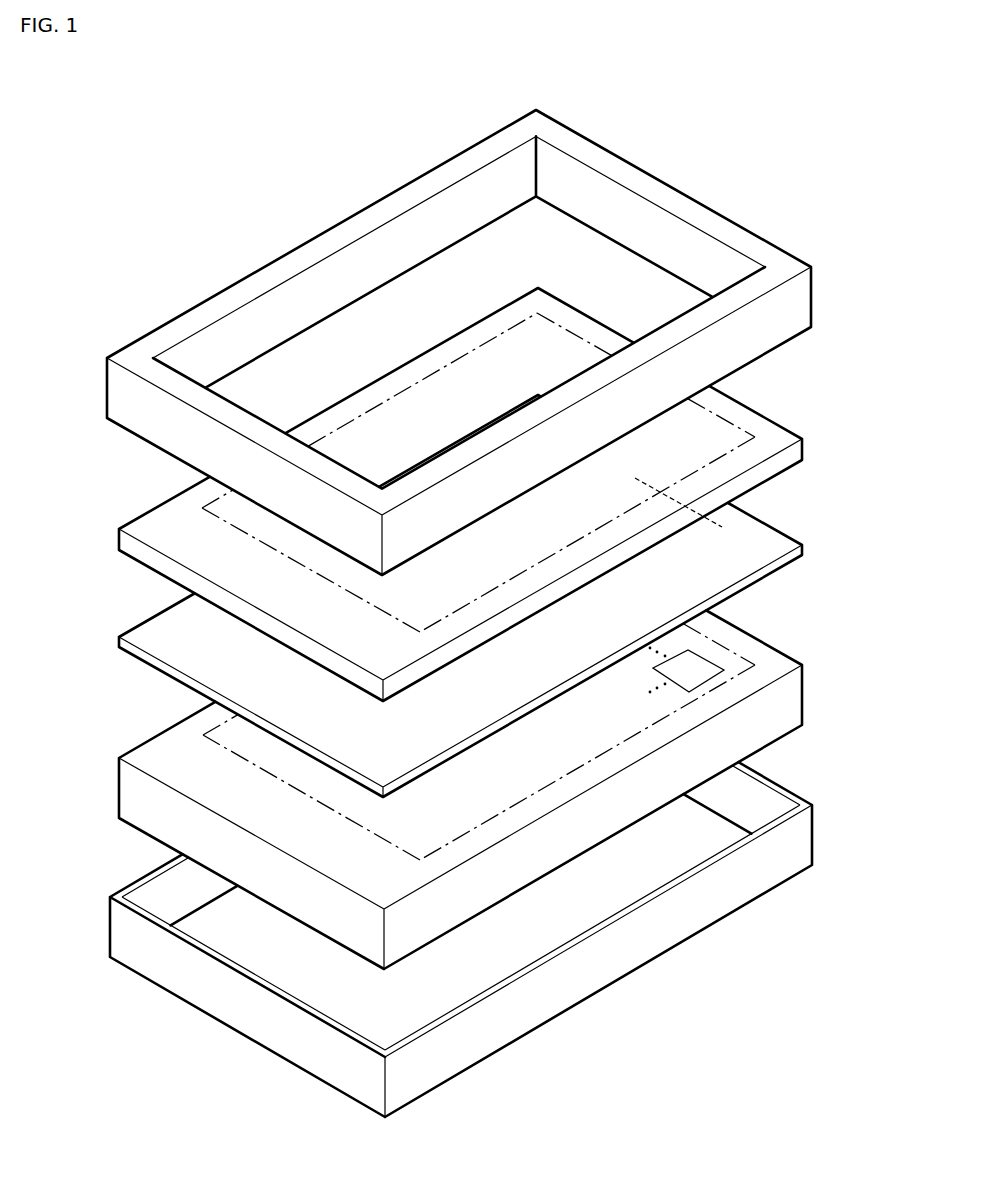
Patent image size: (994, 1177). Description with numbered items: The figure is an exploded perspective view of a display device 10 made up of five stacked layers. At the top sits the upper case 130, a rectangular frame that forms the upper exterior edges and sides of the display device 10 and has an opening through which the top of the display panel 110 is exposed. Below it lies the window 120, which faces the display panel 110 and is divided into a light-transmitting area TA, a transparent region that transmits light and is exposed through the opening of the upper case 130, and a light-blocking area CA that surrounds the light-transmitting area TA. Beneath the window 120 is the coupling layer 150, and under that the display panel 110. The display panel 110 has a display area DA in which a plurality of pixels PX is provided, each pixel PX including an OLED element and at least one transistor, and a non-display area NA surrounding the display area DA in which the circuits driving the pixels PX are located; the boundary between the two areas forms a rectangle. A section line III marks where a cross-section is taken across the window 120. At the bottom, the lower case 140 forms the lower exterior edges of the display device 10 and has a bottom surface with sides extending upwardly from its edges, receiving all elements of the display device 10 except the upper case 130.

The display device 10 is at (634, 97).
The display panel 110 is at (458, 790).
The window 120 is at (474, 494).
The upper case 130 is at (799, 302).
The lower case 140 is at (800, 838).
The coupling layer 150 is at (800, 548).
The light-transmitting area TA is at (223, 505).
The light-blocking area CA is at (173, 530).
The display area DA is at (230, 733).
The non-display area NA is at (168, 758).
The pixel PX is at (686, 670).
The section line III-III' III is at (686, 501).